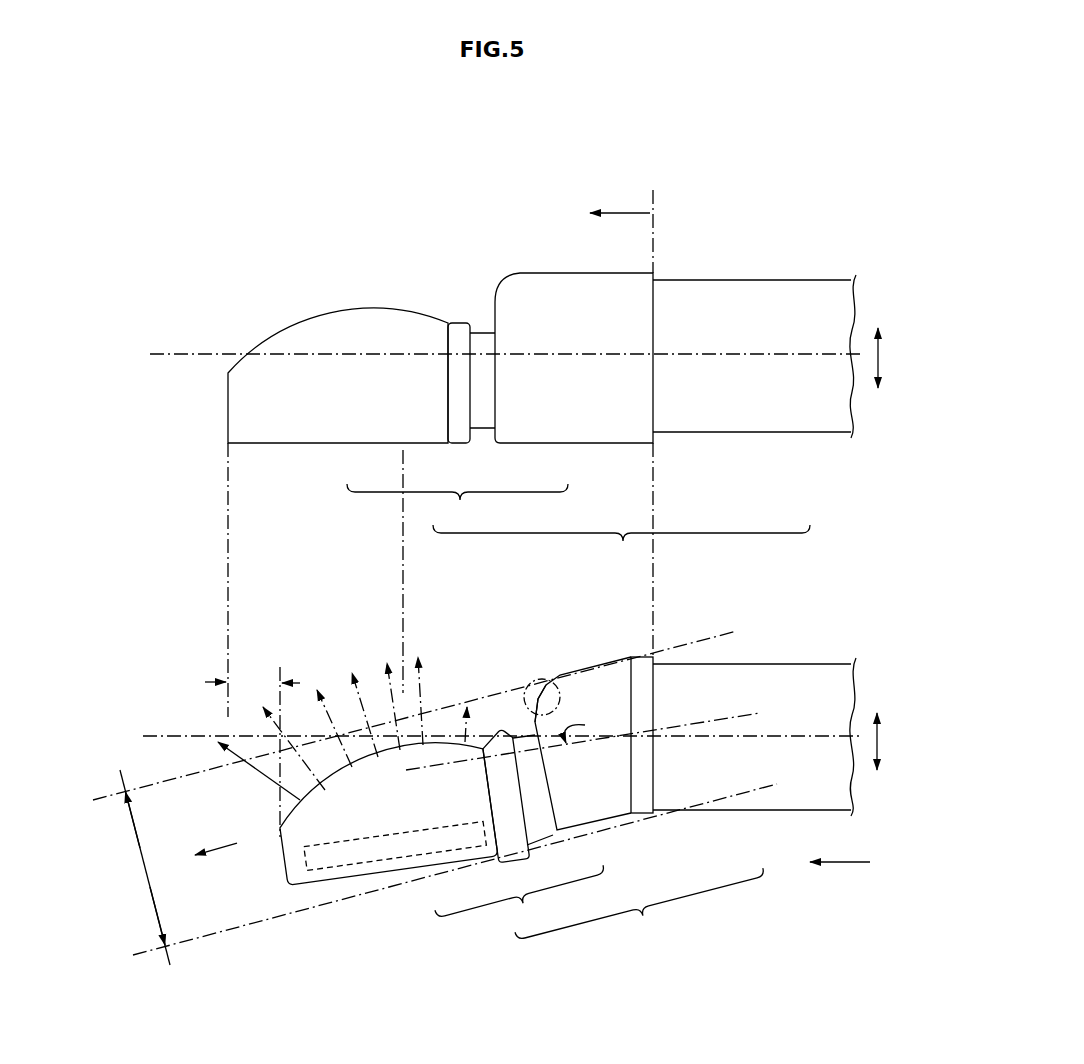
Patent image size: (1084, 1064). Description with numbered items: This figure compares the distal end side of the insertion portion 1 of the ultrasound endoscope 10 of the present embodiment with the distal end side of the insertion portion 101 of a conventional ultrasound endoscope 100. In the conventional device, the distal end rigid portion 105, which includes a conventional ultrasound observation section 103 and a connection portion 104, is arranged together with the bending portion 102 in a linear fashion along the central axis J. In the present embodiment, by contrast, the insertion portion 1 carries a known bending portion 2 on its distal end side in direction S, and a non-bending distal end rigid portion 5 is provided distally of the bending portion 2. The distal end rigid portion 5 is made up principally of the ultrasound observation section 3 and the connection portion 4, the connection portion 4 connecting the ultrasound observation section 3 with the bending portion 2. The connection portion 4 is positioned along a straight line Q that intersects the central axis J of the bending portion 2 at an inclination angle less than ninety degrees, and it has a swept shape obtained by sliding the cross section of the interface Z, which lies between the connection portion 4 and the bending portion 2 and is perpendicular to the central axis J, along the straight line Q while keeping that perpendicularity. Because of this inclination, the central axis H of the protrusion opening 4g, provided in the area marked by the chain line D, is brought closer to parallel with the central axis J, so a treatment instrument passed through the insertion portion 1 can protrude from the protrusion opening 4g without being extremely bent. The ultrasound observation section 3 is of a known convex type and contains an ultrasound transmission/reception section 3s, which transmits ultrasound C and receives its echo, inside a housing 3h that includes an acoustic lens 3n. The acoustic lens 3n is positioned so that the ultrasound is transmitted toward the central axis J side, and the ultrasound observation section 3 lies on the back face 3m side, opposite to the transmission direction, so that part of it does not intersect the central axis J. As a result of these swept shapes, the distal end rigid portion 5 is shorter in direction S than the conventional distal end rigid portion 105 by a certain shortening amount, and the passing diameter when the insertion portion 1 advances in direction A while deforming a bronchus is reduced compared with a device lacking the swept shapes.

The ultrasound endoscope 100 is at (727, 255).
The insertion portion 101 is at (621, 546).
The bending portion 102 is at (797, 434).
The ultrasound observation section 103 is at (376, 446).
The connection portion 104 is at (549, 446).
The distal end rigid portion 105 is at (457, 507).
The ultrasound endoscope 10 is at (764, 650).
The insertion portion 1 is at (641, 908).
The bending portion 2 is at (748, 802).
The ultrasound observation section 3 is at (453, 856).
The acoustic lens 3n is at (297, 797).
The housing 3h is at (296, 840).
The back face 3m is at (335, 888).
The ultrasound transmission/reception section 3s is at (398, 852).
The connection portion 4 is at (595, 832).
The protrusion opening 4g is at (537, 699).
The distal end rigid portion 5 is at (521, 902).
The interface Z is at (657, 703).
The chain line D is at (549, 680).
The central axis H is at (452, 697).
The straight line Q is at (573, 752).